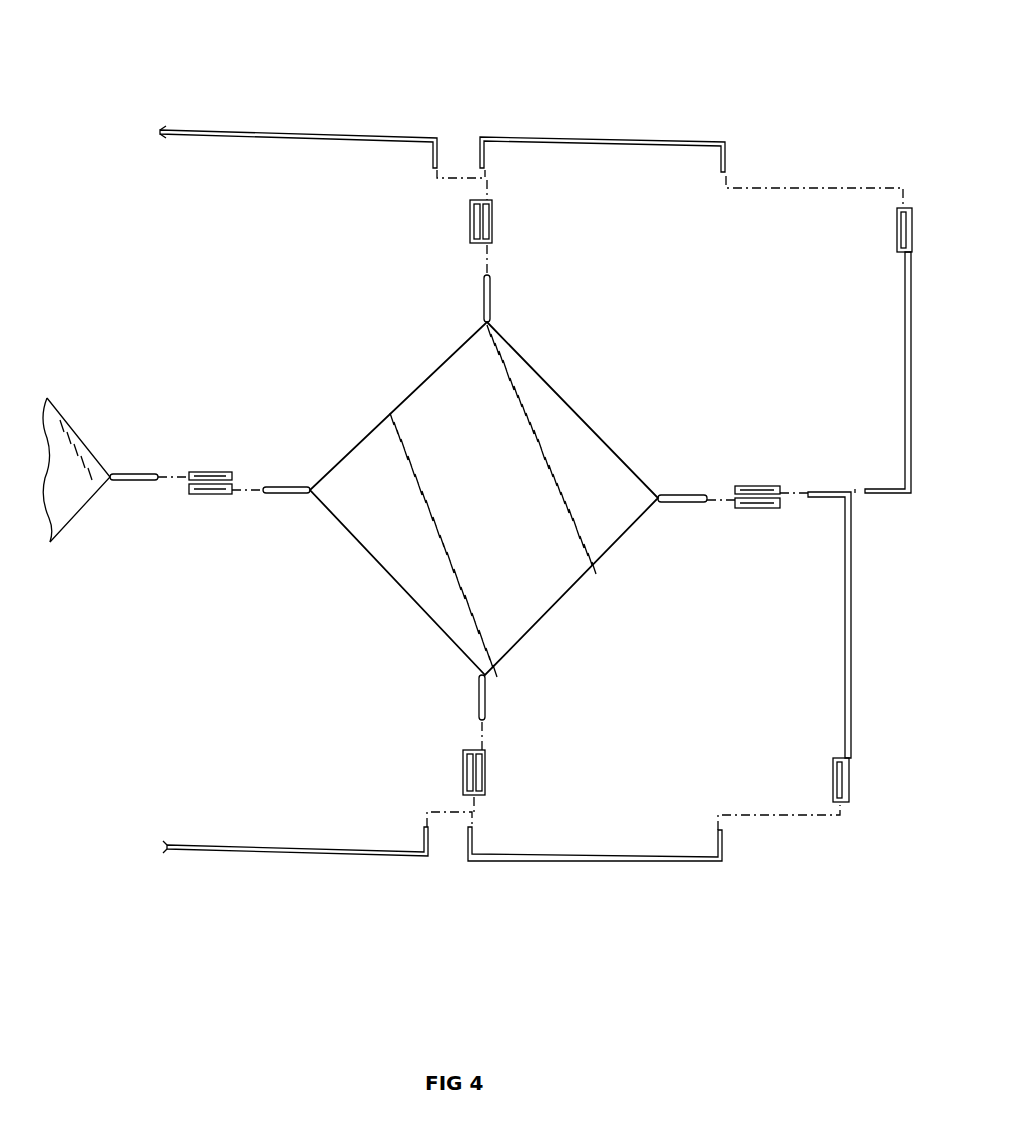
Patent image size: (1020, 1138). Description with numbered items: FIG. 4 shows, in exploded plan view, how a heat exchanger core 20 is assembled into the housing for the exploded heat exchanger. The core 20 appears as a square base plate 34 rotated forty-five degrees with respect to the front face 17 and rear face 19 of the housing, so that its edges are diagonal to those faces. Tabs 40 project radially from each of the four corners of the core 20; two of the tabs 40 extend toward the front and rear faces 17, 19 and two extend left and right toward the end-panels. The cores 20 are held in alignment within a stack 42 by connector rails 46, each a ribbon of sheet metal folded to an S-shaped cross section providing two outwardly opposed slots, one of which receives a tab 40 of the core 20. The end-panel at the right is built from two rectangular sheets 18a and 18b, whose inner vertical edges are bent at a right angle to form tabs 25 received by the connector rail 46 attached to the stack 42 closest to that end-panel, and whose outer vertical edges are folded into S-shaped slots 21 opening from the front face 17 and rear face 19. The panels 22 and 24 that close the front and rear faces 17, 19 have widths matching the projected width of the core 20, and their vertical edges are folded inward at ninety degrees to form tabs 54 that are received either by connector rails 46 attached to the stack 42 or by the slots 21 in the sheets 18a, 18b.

The front face 17 is at (254, 737).
The rectangular sheet 18a is at (903, 415).
The rectangular sheet 18b is at (852, 706).
The rear face 19 is at (223, 44).
The core 20 is at (90, 420).
The slot 21 is at (897, 242).
The panel 22 is at (650, 137).
The panel 24 is at (342, 136).
The tab 25 is at (830, 478).
The base plate 34 is at (484, 499).
The tab 40 is at (492, 298).
The stack 42 is at (579, 377).
The connector rail 46 is at (470, 225).
The tab 54 is at (481, 149).